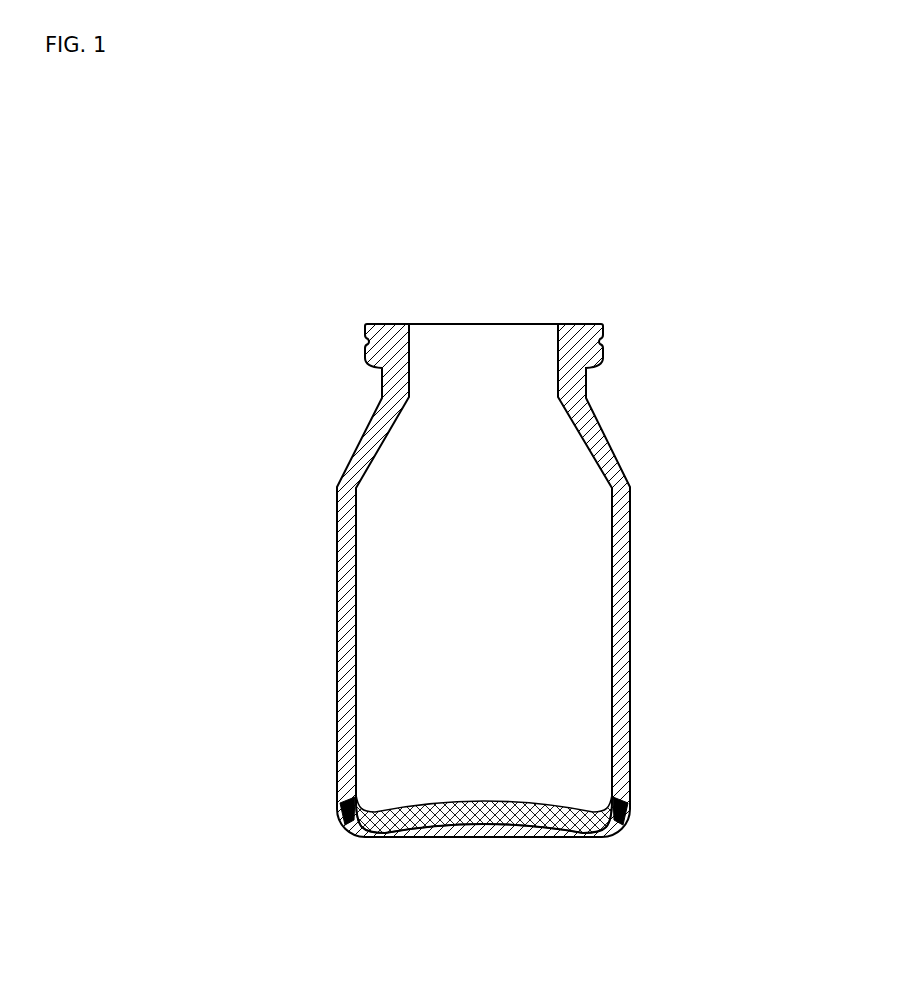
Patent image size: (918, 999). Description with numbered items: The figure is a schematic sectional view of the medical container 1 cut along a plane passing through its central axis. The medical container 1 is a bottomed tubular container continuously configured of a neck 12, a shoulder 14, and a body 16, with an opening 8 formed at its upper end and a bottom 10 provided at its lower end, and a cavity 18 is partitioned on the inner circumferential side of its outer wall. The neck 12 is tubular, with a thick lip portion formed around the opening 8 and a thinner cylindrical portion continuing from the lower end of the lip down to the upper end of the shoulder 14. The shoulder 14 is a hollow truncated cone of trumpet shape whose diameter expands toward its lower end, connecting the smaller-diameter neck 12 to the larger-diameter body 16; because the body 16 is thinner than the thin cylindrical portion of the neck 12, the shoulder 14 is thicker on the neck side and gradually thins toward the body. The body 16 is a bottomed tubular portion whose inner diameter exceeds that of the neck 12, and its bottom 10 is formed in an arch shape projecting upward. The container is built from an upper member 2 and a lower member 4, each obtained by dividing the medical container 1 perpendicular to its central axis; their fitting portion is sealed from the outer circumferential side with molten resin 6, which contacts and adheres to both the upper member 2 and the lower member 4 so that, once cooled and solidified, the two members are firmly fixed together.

The medical container 1 is at (442, 545).
The upper member 2 is at (600, 425).
The lower member 4 is at (437, 818).
The molten resin 6 is at (335, 818).
The opening 8 is at (479, 303).
The bottom 10 is at (497, 845).
The neck 12 is at (300, 324).
The shoulder 14 is at (300, 491).
The body 16 is at (300, 832).
The cavity 18 is at (557, 615).